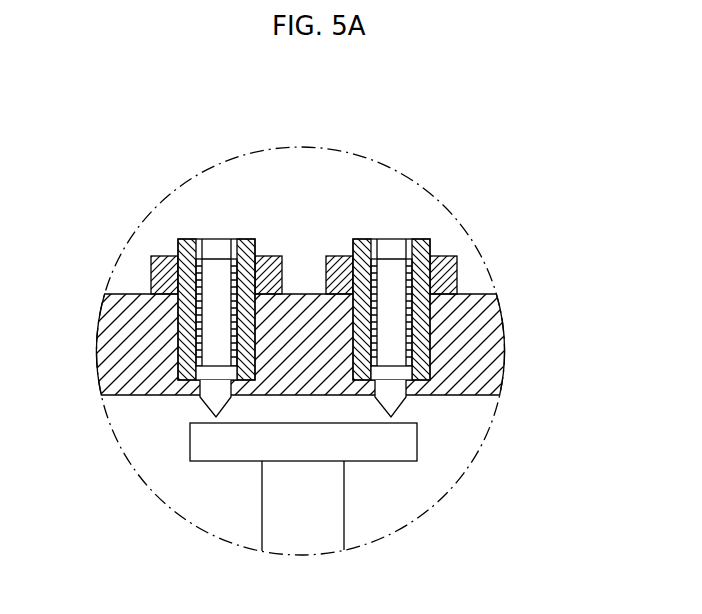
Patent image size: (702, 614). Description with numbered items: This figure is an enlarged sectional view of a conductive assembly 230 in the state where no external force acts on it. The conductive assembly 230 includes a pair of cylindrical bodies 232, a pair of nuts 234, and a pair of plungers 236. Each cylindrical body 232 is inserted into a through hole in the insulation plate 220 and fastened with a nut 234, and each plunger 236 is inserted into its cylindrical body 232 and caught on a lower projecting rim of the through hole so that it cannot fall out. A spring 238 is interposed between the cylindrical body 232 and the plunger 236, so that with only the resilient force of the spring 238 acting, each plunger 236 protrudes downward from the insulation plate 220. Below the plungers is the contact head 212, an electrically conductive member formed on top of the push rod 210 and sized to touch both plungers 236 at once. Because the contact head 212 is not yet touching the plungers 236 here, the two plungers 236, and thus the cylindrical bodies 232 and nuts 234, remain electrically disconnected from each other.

The push rod 210 is at (328, 513).
The contact head 212 is at (403, 438).
The insulation plate 220 is at (494, 341).
The conductive assembly 230 is at (473, 150).
The cylindrical body 232 is at (242, 245).
The nut 234 is at (166, 256).
The plunger 236 is at (210, 402).
The spring 238 is at (431, 242).